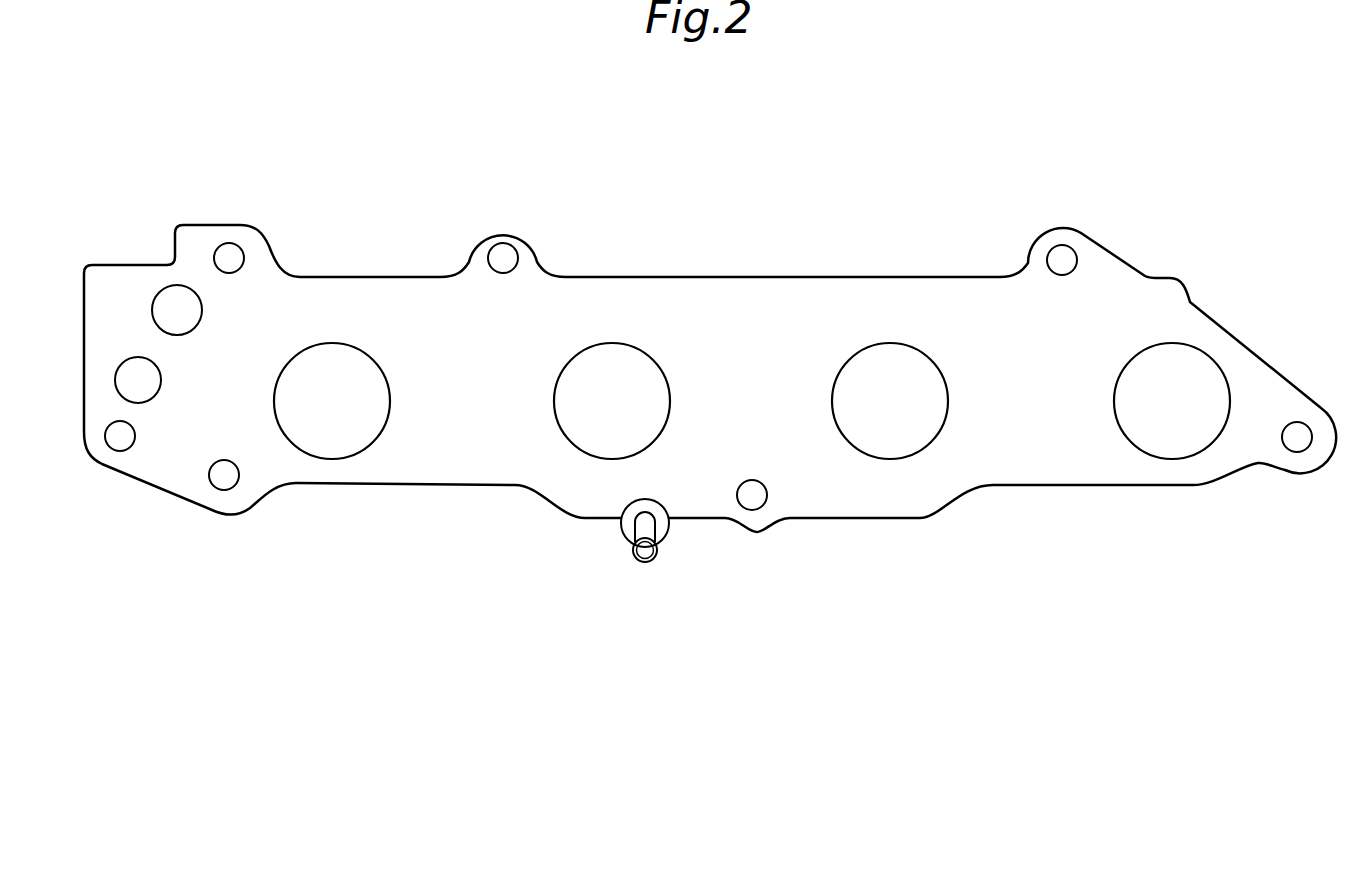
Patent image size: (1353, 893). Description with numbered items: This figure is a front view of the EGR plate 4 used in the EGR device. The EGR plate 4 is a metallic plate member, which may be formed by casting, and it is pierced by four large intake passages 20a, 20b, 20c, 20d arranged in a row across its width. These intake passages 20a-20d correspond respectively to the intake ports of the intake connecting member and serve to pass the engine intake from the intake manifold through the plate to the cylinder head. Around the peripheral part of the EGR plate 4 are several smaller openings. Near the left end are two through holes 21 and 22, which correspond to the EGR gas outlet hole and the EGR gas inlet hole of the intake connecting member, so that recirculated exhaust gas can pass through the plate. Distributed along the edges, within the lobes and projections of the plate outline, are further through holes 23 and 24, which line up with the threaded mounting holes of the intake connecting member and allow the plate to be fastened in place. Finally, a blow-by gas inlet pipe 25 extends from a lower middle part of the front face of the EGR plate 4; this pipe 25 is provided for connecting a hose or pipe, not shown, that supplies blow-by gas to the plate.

The EGR plate 4 is at (930, 157).
The intake passage 20a is at (340, 346).
The intake passage 20b is at (620, 346).
The intake passage 20c is at (896, 346).
The intake passage 20d is at (1146, 348).
The through hole 21 is at (120, 392).
The through hole 22 is at (158, 305).
The through hole 23 is at (494, 252).
The through hole 24 is at (220, 250).
The blow-by gas inlet pipe 25 is at (640, 532).